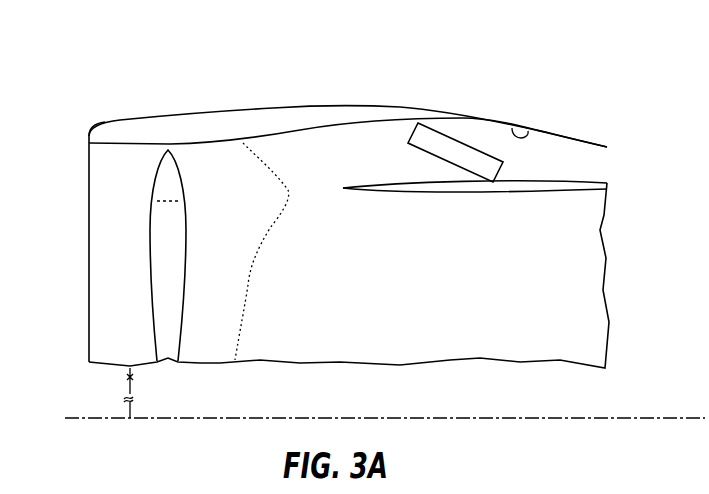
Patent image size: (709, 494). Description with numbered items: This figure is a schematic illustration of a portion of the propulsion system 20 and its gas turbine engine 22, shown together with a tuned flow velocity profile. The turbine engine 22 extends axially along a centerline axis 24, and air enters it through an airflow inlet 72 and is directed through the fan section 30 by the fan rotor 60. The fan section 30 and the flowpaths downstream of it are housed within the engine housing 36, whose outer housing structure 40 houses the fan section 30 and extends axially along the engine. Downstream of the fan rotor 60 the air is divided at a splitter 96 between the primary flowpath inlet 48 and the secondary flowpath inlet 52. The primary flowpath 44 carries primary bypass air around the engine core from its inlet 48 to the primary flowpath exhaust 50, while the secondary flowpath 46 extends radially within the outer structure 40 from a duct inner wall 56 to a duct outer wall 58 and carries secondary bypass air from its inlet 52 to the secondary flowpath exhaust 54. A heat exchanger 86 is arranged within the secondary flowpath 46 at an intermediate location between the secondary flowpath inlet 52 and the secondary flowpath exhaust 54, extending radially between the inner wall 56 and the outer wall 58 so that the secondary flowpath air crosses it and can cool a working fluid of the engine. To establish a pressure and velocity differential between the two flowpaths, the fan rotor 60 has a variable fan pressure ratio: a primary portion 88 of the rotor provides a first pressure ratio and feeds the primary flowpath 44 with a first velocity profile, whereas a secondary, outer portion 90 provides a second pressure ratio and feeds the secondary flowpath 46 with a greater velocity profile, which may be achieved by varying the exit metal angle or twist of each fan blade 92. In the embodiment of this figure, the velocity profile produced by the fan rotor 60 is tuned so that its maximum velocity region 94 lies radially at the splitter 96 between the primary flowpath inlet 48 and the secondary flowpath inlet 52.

The propulsion system 20 is at (124, 67).
The gas turbine engine 22 is at (347, 194).
The centerline axis 24 is at (77, 418).
The fan section 30 is at (170, 116).
The engine housing 36 is at (366, 85).
The outer housing structure 40 is at (270, 110).
The primary flowpath 44 is at (416, 295).
The secondary flowpath 46 is at (417, 175).
The primary flowpath inlet 48 is at (342, 292).
The primary flowpath exhaust 50 is at (605, 203).
The secondary flowpath inlet 52 is at (357, 163).
The secondary flowpath exhaust 54 is at (604, 168).
The duct inner wall 56 is at (538, 184).
The duct outer wall 58 is at (522, 128).
The fan rotor 60 is at (180, 312).
The airflow inlet 72 is at (88, 195).
The heat exchanger 86 is at (467, 144).
The primary portion 88 is at (143, 262).
The secondary portion 90 is at (148, 181).
The fan blade 92 is at (147, 297).
The maximum velocity region 94 is at (287, 202).
The splitter 96 is at (374, 195).